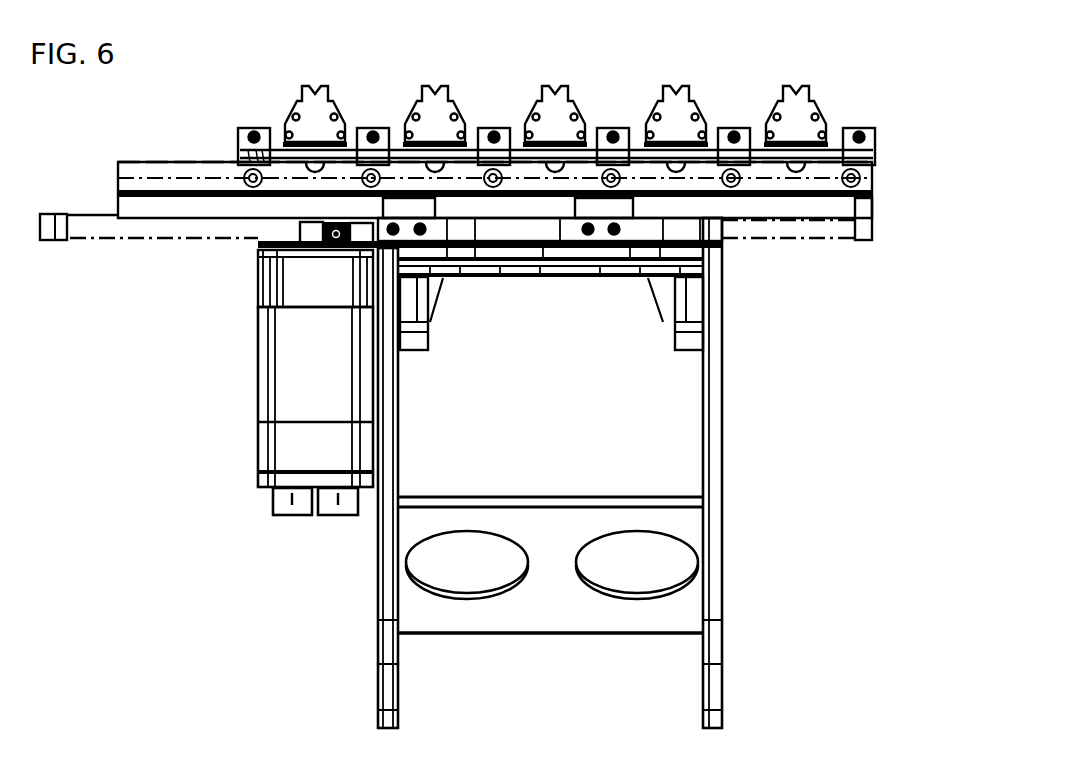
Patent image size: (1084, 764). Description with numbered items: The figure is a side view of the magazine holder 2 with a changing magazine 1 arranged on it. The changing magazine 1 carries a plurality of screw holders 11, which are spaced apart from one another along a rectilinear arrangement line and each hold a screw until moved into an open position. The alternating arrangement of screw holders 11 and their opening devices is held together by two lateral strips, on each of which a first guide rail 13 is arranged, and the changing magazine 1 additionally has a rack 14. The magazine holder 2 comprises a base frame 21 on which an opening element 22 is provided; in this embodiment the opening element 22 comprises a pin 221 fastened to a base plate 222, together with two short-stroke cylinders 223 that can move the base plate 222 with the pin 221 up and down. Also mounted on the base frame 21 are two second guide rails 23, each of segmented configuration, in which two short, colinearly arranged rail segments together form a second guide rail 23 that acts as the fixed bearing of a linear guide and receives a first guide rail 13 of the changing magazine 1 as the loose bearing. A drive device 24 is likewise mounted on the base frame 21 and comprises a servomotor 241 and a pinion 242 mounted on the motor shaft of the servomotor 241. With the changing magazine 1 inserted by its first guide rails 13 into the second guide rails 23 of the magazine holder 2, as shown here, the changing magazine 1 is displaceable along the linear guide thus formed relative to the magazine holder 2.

The changing magazine 1 is at (727, 86).
The screw holder 11 is at (574, 106).
The first guide rail 13 is at (858, 208).
The rack 14 is at (88, 232).
The magazine holder 2 is at (744, 451).
The base frame 21 is at (717, 555).
The opening element 22 is at (660, 352).
The pin 221 is at (610, 282).
The base plate 222 is at (497, 279).
The short-stroke cylinder 223 is at (432, 318).
The second guide rail 23 is at (434, 208).
The drive device 24 is at (182, 267).
The servomotor 241 is at (302, 368).
The pinion 242 is at (312, 242).